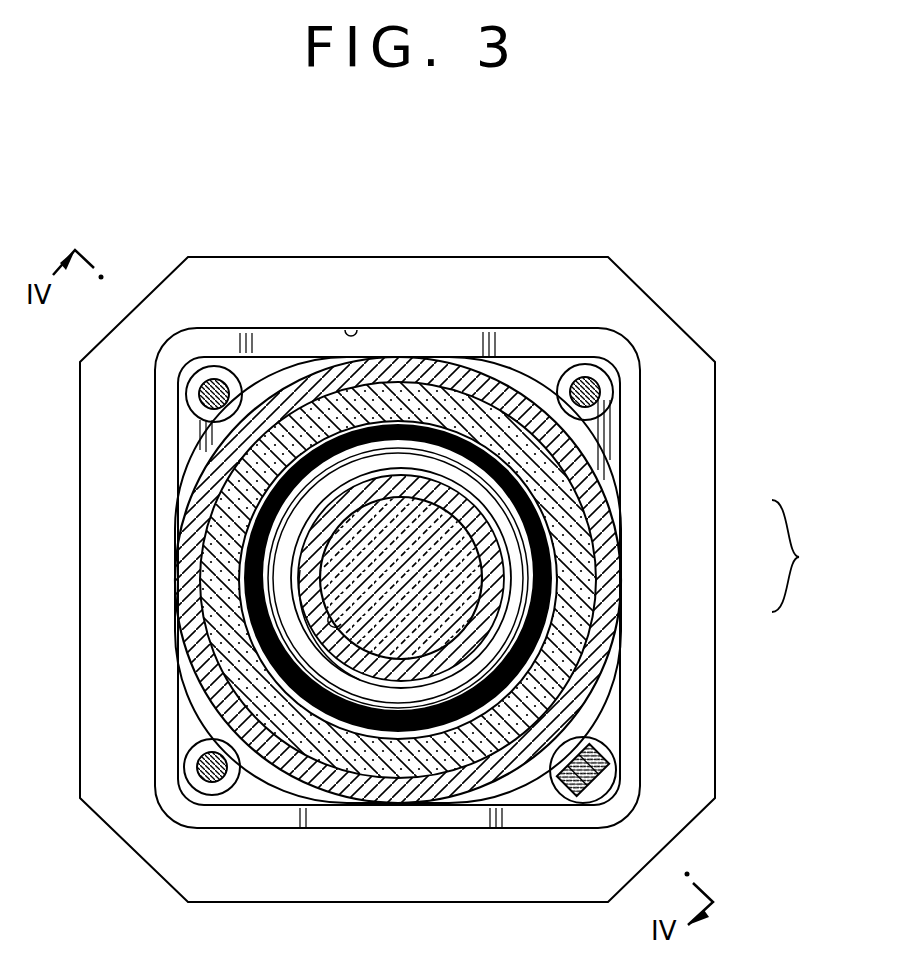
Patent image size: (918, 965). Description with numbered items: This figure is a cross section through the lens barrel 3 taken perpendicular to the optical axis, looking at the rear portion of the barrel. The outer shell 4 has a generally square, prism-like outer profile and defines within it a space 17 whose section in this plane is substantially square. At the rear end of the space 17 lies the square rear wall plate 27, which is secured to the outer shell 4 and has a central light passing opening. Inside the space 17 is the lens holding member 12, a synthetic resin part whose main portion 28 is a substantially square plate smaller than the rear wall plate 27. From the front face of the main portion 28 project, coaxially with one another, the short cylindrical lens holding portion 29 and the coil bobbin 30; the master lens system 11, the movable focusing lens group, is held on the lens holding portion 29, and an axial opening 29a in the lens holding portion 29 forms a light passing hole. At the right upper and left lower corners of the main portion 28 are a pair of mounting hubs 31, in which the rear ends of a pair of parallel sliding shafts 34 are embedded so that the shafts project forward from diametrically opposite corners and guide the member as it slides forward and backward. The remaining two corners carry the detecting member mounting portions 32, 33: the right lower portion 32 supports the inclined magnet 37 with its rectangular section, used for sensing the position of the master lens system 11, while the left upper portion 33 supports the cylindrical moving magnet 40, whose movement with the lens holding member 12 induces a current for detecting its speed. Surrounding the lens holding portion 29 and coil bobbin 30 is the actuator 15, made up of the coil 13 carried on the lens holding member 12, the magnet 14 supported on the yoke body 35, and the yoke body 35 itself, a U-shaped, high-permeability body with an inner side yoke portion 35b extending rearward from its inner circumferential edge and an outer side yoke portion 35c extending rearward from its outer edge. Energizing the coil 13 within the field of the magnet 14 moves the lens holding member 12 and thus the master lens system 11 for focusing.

The lens barrel 3 is at (397, 522).
The outer shell 4 is at (452, 258).
The master lens system 11 is at (336, 583).
The lens holding member 12 is at (263, 352).
The coil 13 is at (556, 579).
The magnet 14 is at (583, 537).
The actuator 15 is at (802, 556).
The space 17 is at (363, 330).
The rear wall plate 27 is at (529, 330).
The main portion 28 is at (283, 365).
The lens holding portion 29 is at (362, 672).
The axial opening 29a is at (313, 705).
The coil bobbin 30 is at (398, 662).
The mounting hubs 31 is at (618, 389).
The detecting member mounting portion 32 is at (596, 794).
The detecting member mounting portion 33 is at (198, 392).
The sliding shafts 34 is at (588, 376).
The yoke body 35 is at (612, 506).
The inner side yoke portion 35b is at (462, 672).
The outer side yoke portion 35c is at (605, 650).
The inclined magnet 37 is at (600, 764).
The moving magnet 40 is at (198, 404).